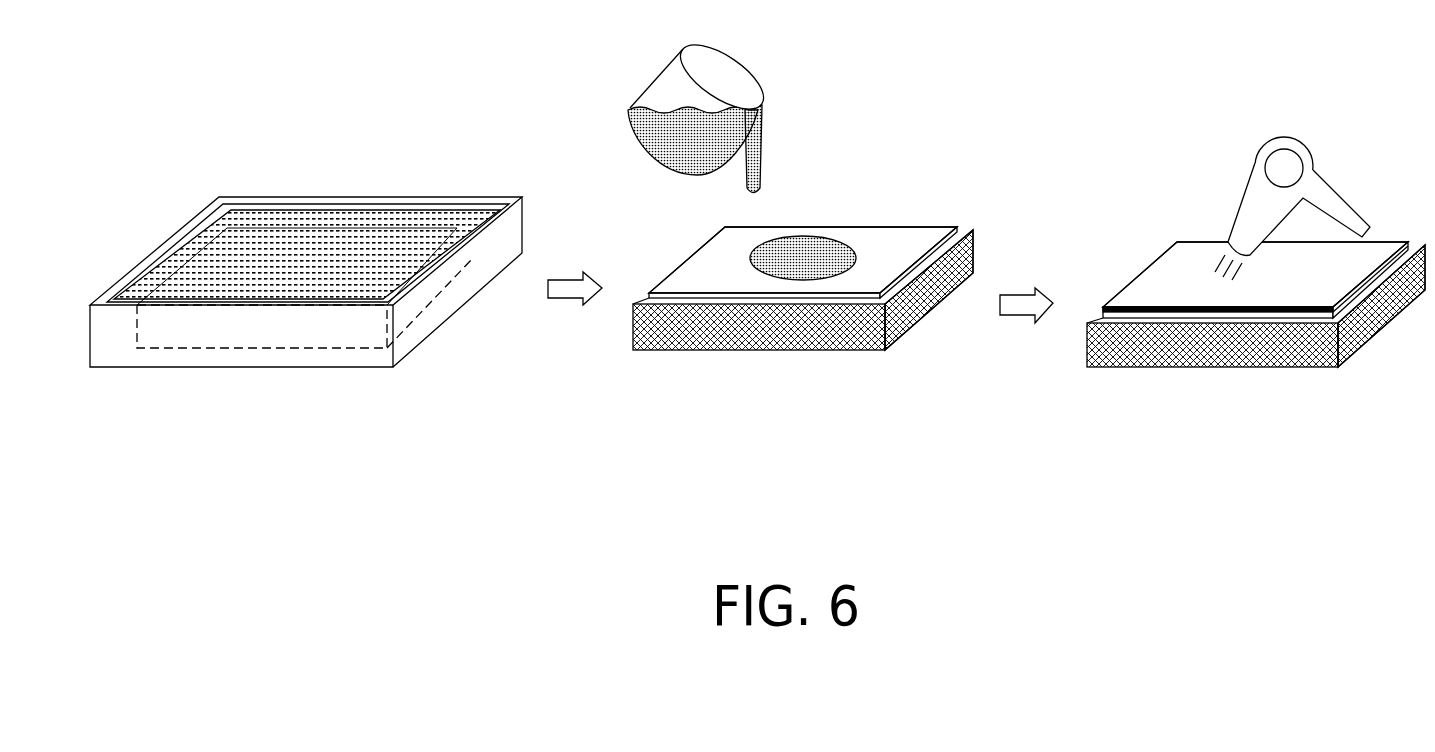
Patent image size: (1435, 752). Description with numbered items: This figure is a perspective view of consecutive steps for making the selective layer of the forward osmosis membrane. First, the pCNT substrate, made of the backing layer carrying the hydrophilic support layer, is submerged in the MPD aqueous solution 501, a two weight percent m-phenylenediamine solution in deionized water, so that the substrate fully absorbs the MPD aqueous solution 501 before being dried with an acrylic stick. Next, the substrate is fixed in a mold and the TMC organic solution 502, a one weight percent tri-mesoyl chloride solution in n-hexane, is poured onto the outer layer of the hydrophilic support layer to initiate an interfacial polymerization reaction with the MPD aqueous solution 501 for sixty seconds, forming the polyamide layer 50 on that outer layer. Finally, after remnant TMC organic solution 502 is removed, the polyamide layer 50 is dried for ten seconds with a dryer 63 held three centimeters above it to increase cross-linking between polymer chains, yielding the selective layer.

The polyamide (PA) layer 50 is at (1381, 250).
The MPD aqueous solution 501 is at (208, 228).
The TMC organic solution 502 is at (807, 250).
The dryer 63 is at (1290, 138).